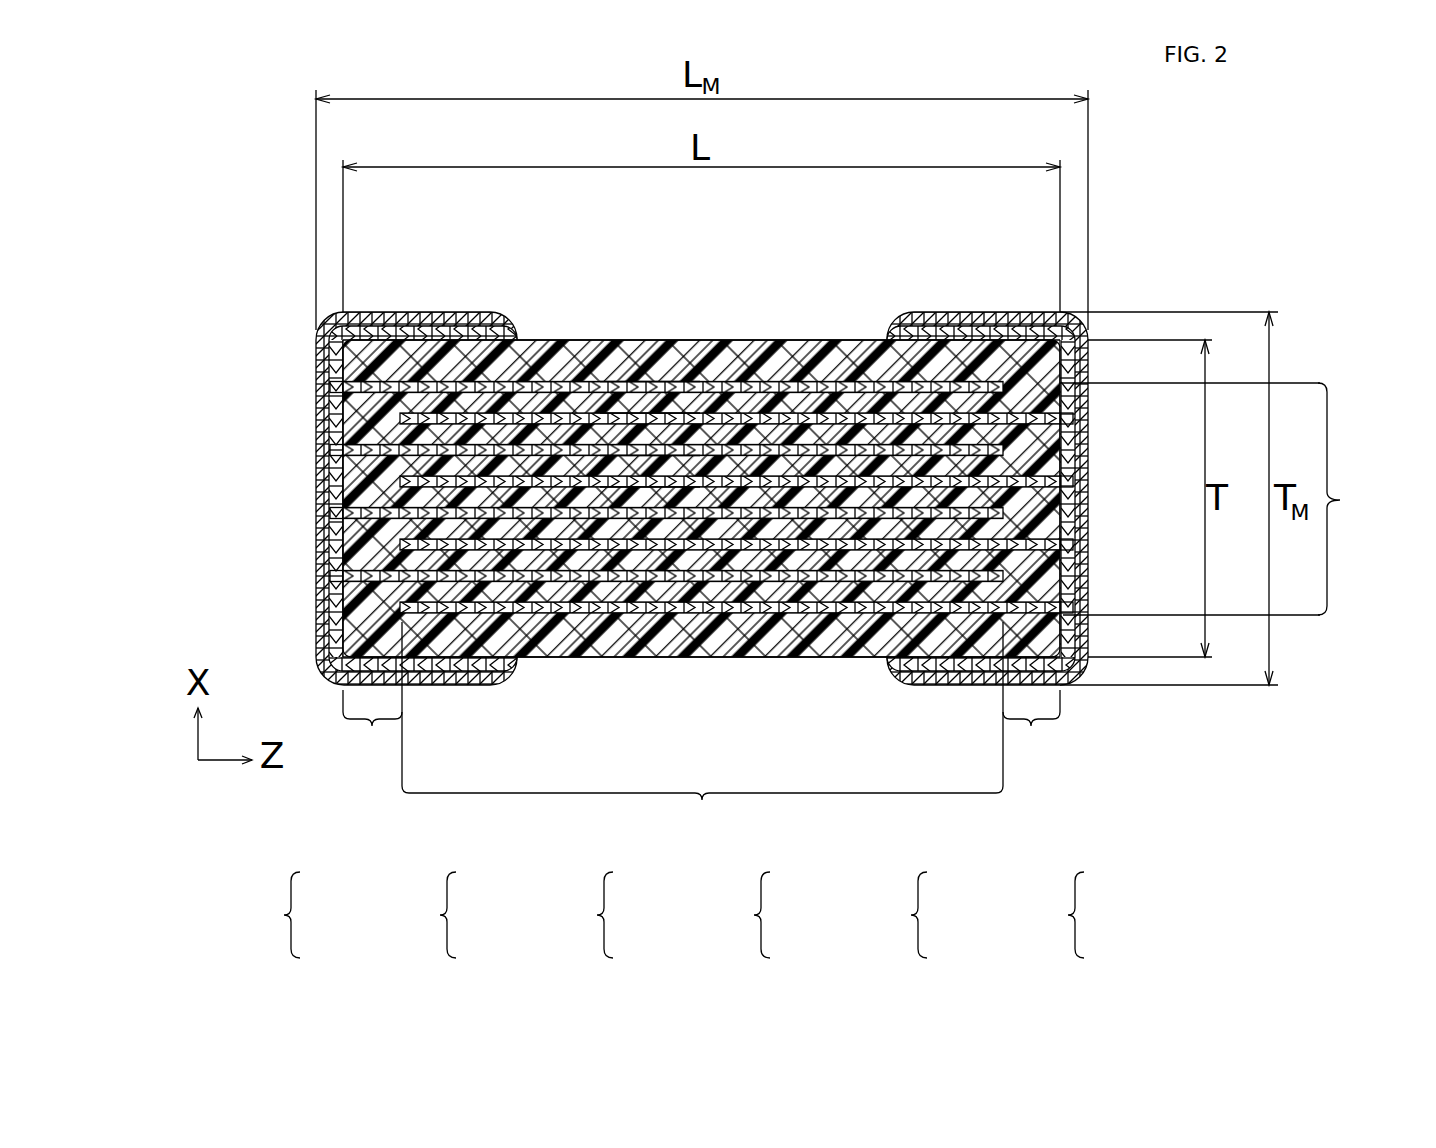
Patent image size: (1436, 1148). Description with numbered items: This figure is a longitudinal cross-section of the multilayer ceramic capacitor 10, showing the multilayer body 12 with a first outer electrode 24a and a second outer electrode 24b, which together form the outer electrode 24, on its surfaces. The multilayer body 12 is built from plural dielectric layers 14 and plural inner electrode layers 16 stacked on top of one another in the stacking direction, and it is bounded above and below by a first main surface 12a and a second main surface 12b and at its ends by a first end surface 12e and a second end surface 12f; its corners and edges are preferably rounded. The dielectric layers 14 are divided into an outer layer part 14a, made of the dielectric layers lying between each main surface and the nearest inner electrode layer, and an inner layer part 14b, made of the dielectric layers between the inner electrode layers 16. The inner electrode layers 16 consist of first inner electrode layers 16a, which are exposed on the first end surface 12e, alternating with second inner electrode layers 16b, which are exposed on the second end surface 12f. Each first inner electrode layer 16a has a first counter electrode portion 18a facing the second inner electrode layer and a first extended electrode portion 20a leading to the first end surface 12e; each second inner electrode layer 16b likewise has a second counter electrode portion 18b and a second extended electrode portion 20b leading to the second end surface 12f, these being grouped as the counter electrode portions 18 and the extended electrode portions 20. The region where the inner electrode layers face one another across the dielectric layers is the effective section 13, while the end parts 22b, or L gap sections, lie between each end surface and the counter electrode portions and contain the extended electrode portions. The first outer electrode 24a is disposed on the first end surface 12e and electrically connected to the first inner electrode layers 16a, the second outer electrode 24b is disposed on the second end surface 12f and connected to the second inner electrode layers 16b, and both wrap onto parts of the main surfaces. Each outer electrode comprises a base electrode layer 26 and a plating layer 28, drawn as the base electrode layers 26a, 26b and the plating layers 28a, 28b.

The multilayer ceramic capacitor 10 is at (260, 292).
The multilayer body 12 is at (865, 327).
The first main surface 12a is at (822, 340).
The second main surface 12b is at (855, 660).
The first end surface 12e is at (343, 480).
The second end surface 12f is at (1060, 392).
The effective section 13 is at (891, 614).
The dielectric layers 14 is at (680, 258).
The outer layer part 14a is at (720, 367).
The inner layer part 14b is at (798, 463).
The inner electrode layers 16 is at (273, 915).
The first inner electrode layers 16a is at (535, 447).
The second inner electrode layers 16b is at (590, 483).
The counter electrode portions 18 is at (429, 915).
The first counter electrode portion 18a is at (623, 450).
The second counter electrode portion 18b is at (673, 483).
The extended electrode portions 20 is at (586, 915).
The first extended electrode portion 20a is at (345, 447).
The second extended electrode portion 20b is at (1060, 480).
The end parts 22b is at (702, 731).
The outer electrode 24 is at (743, 915).
The first outer electrode 24a is at (726, 557).
The second outer electrode 24b is at (955, 574).
The base electrode layer 26 is at (900, 915).
The base electrode layer of first outer electrode 26a is at (490, 258).
The base electrode layer of second outer electrode 26b is at (1040, 258).
The plating layer 28 is at (1057, 915).
The plating layer of first outer electrode 28a is at (448, 318).
The plating layer of second outer electrode 28b is at (995, 318).